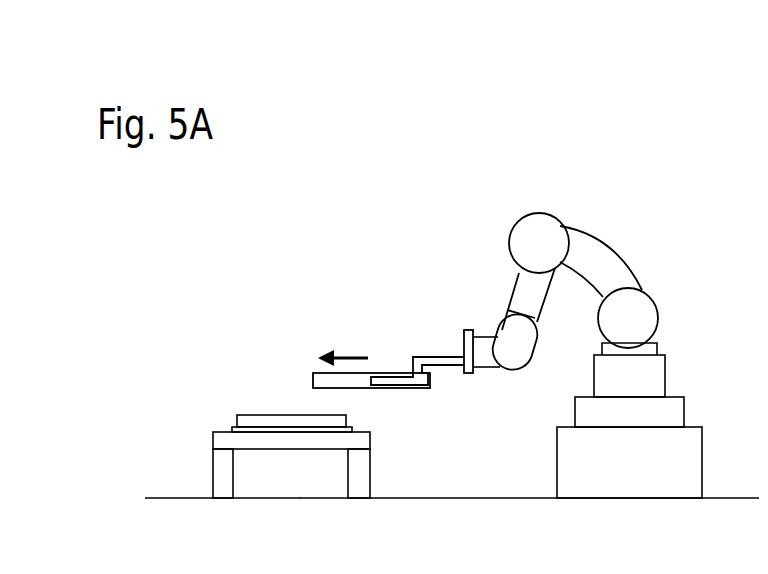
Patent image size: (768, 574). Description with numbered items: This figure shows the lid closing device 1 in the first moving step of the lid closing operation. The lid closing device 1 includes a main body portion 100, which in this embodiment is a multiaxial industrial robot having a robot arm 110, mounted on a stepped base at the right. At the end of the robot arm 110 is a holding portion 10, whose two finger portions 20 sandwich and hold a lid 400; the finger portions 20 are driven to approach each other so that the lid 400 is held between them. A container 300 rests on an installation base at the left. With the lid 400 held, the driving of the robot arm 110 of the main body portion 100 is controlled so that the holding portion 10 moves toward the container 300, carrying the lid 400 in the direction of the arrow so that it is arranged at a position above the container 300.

The lid closing device 1 is at (303, 208).
The holding portion 10 is at (472, 318).
The finger portions 20 is at (396, 375).
The main body portion 100 is at (607, 232).
The robot arm 110 is at (618, 262).
The container 300 is at (232, 425).
The lid 400 is at (310, 382).